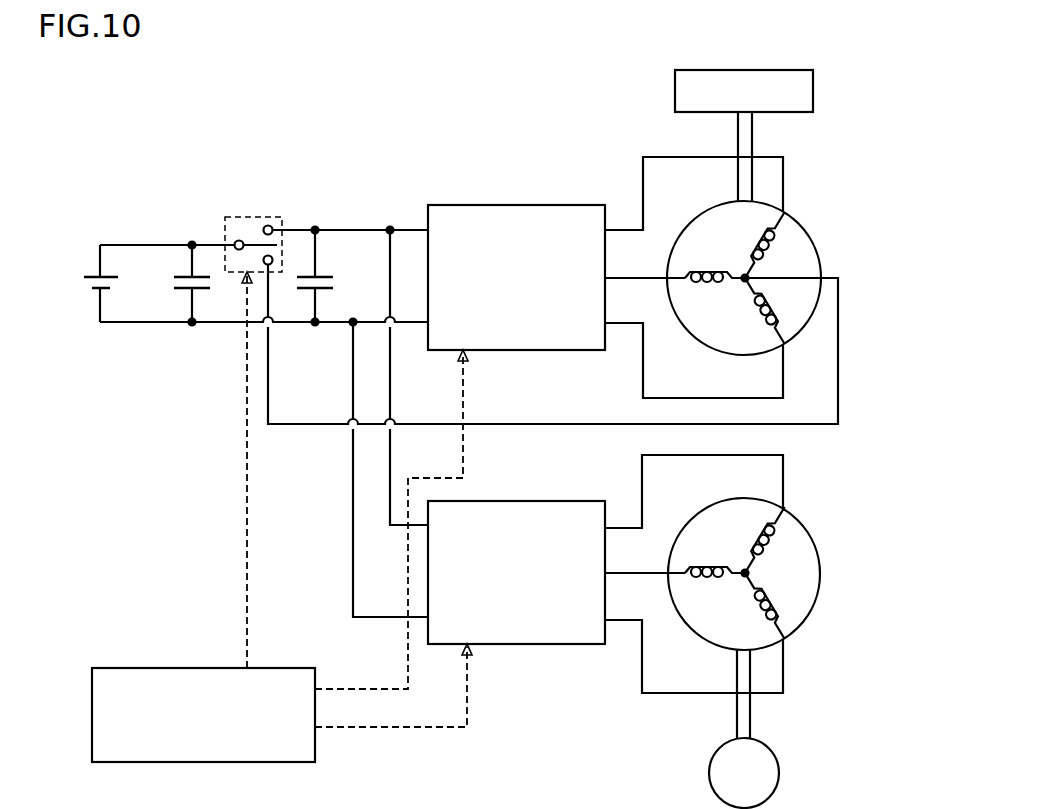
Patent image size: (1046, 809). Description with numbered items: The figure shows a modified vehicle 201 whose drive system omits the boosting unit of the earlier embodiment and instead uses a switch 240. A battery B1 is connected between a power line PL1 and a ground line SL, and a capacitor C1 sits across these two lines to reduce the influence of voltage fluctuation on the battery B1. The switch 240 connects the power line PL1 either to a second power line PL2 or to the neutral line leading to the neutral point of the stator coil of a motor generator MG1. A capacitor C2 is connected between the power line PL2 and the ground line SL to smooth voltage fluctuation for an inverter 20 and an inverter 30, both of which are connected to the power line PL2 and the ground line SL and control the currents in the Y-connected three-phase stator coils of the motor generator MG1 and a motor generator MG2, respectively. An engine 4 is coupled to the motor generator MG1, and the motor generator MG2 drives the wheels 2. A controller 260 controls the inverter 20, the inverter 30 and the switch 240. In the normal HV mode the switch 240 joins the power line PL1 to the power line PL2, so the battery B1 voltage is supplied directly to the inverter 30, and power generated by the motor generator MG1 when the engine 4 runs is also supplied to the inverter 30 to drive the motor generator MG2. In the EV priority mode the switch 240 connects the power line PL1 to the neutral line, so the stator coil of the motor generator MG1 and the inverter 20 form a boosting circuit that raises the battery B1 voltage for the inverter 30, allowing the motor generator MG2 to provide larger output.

The vehicle 201 is at (158, 129).
The switch 240 is at (252, 216).
The inverter 20 is at (515, 205).
The inverter 30 is at (514, 500).
The controller 260 is at (120, 668).
The engine 4 is at (813, 92).
The wheels 2 is at (779, 773).
The battery B1 is at (84, 277).
The capacitor C1 is at (181, 277).
The capacitor C2 is at (326, 273).
The power line PL1 is at (151, 244).
The power line PL2 is at (355, 229).
The ground line SL is at (232, 323).
The motor generator MG1 is at (812, 234).
The motor generator MG2 is at (811, 529).